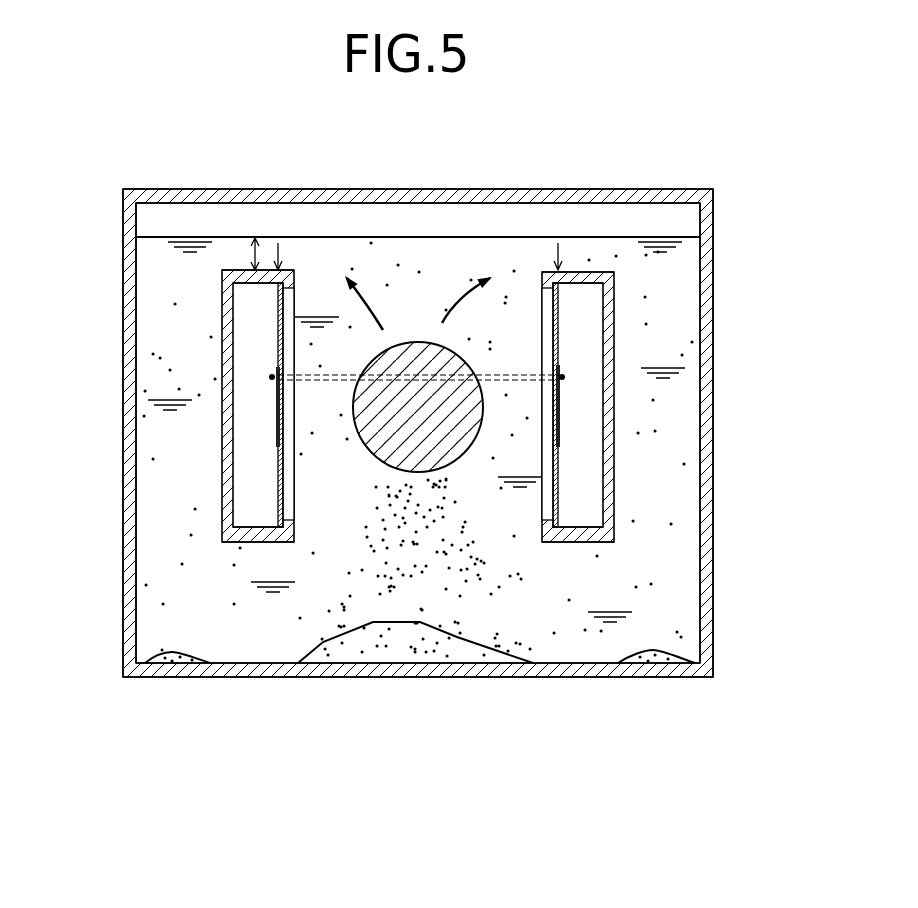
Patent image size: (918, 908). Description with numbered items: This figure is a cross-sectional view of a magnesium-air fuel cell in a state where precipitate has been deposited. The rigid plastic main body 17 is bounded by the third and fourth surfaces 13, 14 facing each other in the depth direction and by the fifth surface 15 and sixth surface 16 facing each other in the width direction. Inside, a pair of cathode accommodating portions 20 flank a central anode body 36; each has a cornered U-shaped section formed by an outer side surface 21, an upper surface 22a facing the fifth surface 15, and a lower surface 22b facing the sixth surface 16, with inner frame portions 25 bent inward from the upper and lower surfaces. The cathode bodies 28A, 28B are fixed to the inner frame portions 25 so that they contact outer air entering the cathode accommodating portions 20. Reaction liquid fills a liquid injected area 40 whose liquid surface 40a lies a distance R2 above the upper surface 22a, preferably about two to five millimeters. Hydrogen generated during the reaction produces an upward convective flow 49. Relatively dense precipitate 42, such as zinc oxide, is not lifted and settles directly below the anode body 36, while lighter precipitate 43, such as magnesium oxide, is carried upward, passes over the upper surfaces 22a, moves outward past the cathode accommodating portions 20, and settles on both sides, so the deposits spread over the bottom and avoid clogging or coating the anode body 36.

The third surface 13 is at (123, 368).
The fourth surface 14 is at (713, 383).
The fifth surface 15 is at (405, 189).
The sixth surface 16 is at (481, 678).
The main body 17 is at (672, 187).
The cathode accommodating portion 20 is at (279, 258).
The outer side surface 21 is at (222, 338).
The upper surface 22a is at (243, 270).
The lower surface 22b is at (255, 542).
The inner frame portion 25 is at (294, 290).
The cathode body 28A is at (278, 418).
The cathode body 28B is at (558, 428).
The anode body 36 is at (447, 360).
The liquid injected area 40 is at (673, 507).
The liquid surface 40a is at (673, 237).
The precipitate 42 is at (397, 645).
The precipitate 43 is at (178, 662).
The convective flow 49 is at (366, 294).
The distance R2 is at (258, 252).